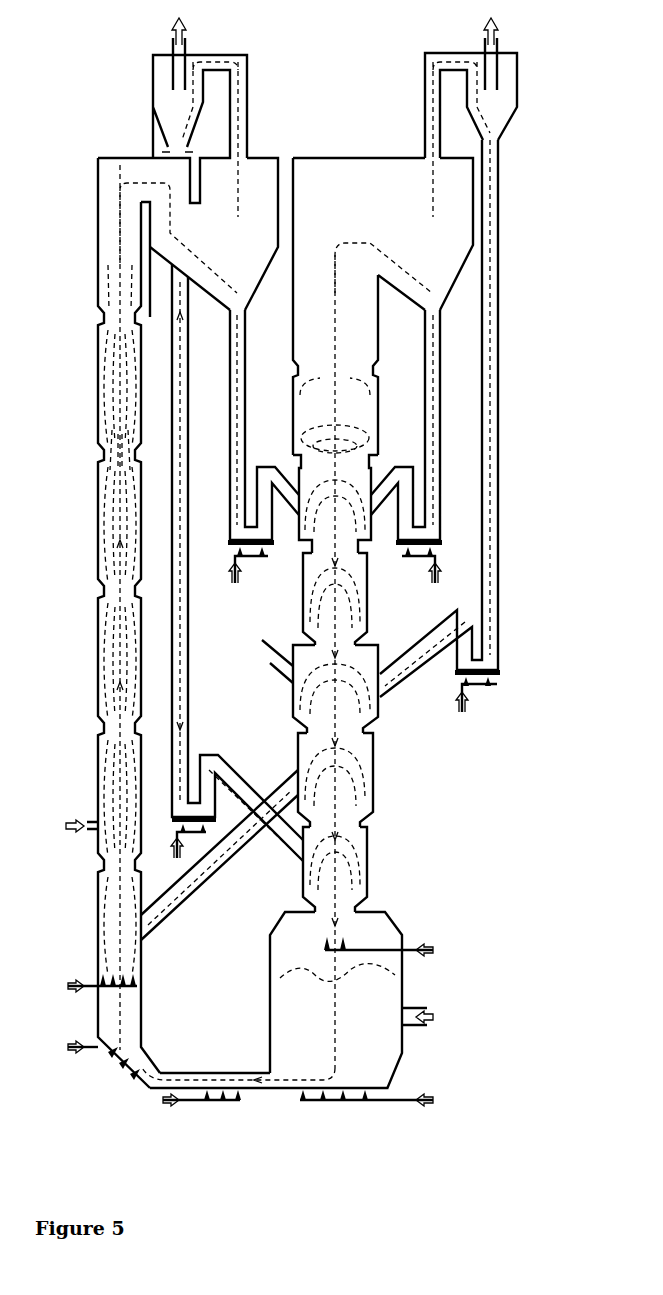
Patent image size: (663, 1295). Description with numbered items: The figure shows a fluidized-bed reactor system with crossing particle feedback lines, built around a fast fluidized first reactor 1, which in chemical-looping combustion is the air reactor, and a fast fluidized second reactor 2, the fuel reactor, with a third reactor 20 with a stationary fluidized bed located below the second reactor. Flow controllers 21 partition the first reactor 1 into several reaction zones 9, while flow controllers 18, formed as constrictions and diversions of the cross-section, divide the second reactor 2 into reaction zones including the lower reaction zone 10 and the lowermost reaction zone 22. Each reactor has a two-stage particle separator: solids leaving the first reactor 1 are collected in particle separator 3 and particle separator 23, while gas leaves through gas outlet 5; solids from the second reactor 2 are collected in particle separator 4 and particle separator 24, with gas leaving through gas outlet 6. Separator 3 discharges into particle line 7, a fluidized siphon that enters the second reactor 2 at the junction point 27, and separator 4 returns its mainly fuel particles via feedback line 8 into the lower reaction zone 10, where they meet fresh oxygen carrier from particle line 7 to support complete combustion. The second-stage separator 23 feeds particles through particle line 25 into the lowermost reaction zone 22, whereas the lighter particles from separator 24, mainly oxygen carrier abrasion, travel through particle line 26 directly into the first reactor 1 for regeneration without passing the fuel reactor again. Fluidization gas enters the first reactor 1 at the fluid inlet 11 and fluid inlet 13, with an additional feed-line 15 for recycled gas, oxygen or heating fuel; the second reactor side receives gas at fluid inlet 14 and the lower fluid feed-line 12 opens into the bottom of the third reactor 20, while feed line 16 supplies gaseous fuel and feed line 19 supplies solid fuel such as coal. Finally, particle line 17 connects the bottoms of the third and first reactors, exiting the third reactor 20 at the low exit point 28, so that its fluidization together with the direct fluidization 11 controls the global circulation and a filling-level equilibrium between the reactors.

The first reactor 1 is at (98, 668).
The second reactor 2 is at (303, 572).
The particle separator 3 is at (262, 280).
The particle separator 4 is at (412, 298).
The gas outlet 5 is at (176, 40).
The gas outlet 6 is at (488, 40).
The particle line 7 is at (228, 535).
The feedback line 8 is at (442, 535).
The reaction zone 9 is at (110, 438).
The reaction zone 10 is at (370, 775).
The fluid inlet 11 is at (90, 1050).
The fluid feed-line 12 is at (410, 1100).
The fluid inlet 13 is at (90, 988).
The fluid inlet 14 is at (403, 948).
The feed-line 15 is at (86, 828).
The feed line 16 is at (415, 1008).
The particle line 17 is at (207, 1073).
The flow controller 18 is at (370, 640).
The feed line 19 is at (276, 668).
The third reactor 20 is at (268, 960).
The flow controller 21 is at (98, 597).
The reaction zone 22 is at (303, 876).
The particle separator 23 is at (162, 126).
The particle separator 24 is at (470, 118).
The particle line 25 is at (178, 820).
The particle line 26 is at (455, 668).
The junction point 27 is at (299, 478).
The exit point 28 is at (268, 1076).